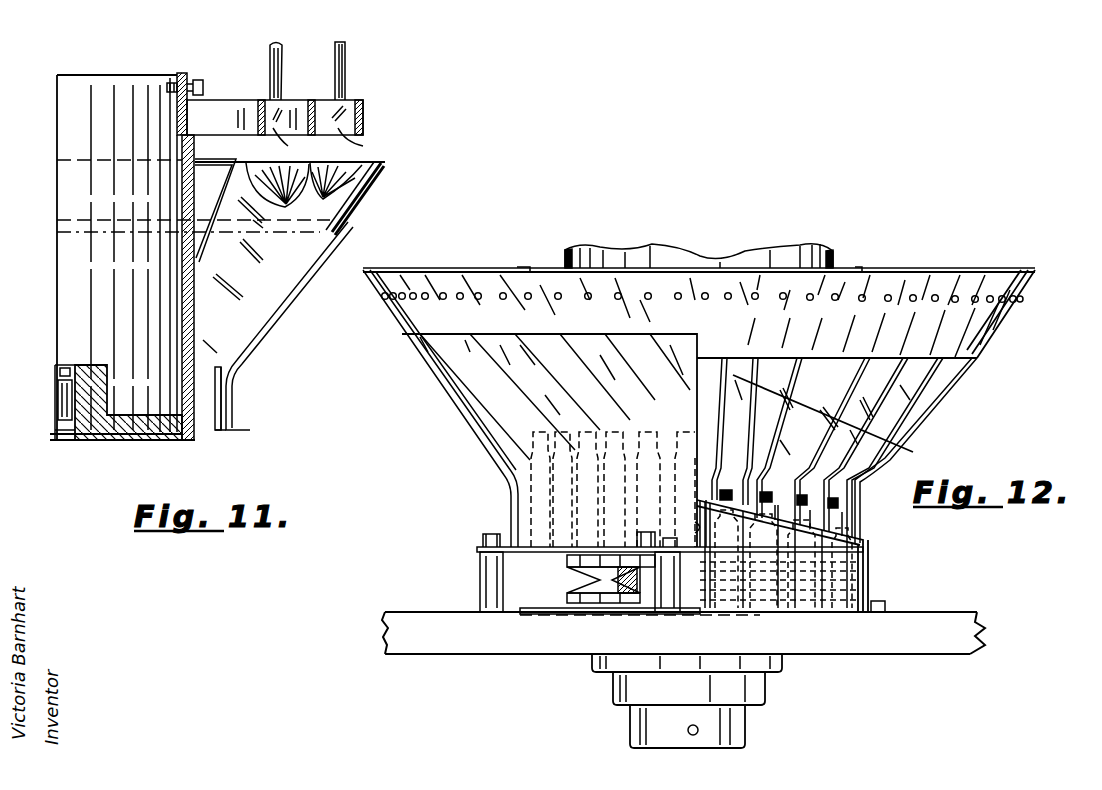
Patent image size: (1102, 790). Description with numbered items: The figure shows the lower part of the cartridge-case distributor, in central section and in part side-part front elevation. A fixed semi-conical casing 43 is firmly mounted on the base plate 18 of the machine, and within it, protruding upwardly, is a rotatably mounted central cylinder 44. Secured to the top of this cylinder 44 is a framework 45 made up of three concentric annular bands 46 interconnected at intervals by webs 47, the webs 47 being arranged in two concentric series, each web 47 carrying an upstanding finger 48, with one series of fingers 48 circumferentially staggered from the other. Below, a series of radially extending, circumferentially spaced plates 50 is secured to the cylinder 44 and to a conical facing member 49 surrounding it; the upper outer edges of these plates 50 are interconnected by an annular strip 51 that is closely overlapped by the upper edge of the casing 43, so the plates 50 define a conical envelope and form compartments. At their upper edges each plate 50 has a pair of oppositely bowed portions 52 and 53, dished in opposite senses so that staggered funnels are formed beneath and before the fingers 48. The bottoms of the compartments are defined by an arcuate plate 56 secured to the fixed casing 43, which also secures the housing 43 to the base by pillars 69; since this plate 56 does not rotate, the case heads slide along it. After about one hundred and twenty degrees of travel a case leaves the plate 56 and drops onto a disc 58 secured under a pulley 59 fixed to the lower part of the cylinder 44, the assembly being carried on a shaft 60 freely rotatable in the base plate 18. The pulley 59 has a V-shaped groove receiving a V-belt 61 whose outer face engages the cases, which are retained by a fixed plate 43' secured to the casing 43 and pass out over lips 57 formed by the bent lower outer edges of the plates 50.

In FIG. 12, the base plate 18 is at (883, 645).
In FIG. 11, the semi-conical casing 43 is at (243, 278).
In FIG. 12, the semi-conical casing 43 is at (530, 408).
In FIG. 12, the fixed plate 43' is at (807, 556).
In FIG. 11, the central cylinder 44 is at (183, 74).
In FIG. 12, the central cylinder 44 is at (826, 259).
In FIG. 11, the framework 45 is at (222, 110).
In FIG. 11, the annular bands 46 is at (261, 100).
In FIG. 11, the webs 47 is at (329, 142).
In FIG. 11, the upstanding finger 48 is at (277, 42).
In FIG. 11, the conical facing member 49 is at (224, 160).
In FIG. 12, the conical facing member 49 is at (833, 418).
In FIG. 11, the plates 50 is at (303, 267).
In FIG. 12, the plates 50 is at (935, 380).
In FIG. 11, the annular strip 51 is at (368, 186).
In FIG. 12, the annular strip 51 is at (985, 332).
In FIG. 11, the bowed portion 52 is at (275, 165).
In FIG. 11, the bowed portion 53 is at (350, 162).
In FIG. 12, the arcuate plate 56 is at (505, 553).
In FIG. 11, the lips 57 is at (222, 400).
In FIG. 12, the lips 57 is at (852, 498).
In FIG. 12, the disc 58 is at (537, 614).
In FIG. 12, the pulley 59 is at (582, 575).
In FIG. 12, the shaft 60 is at (742, 722).
In FIG. 12, the V-belt 61 is at (648, 583).
In FIG. 12, the pillars 69 is at (482, 573).